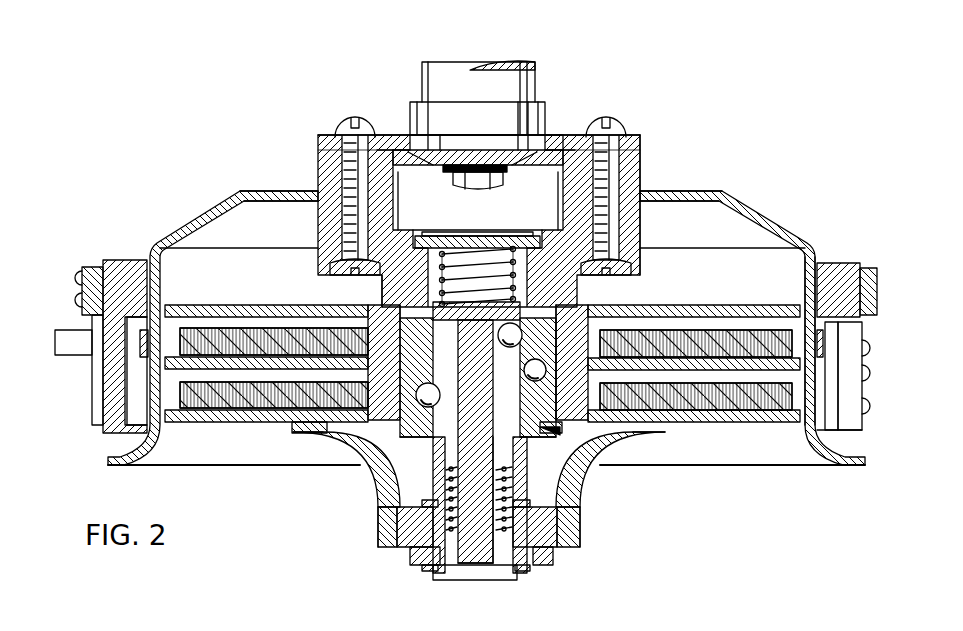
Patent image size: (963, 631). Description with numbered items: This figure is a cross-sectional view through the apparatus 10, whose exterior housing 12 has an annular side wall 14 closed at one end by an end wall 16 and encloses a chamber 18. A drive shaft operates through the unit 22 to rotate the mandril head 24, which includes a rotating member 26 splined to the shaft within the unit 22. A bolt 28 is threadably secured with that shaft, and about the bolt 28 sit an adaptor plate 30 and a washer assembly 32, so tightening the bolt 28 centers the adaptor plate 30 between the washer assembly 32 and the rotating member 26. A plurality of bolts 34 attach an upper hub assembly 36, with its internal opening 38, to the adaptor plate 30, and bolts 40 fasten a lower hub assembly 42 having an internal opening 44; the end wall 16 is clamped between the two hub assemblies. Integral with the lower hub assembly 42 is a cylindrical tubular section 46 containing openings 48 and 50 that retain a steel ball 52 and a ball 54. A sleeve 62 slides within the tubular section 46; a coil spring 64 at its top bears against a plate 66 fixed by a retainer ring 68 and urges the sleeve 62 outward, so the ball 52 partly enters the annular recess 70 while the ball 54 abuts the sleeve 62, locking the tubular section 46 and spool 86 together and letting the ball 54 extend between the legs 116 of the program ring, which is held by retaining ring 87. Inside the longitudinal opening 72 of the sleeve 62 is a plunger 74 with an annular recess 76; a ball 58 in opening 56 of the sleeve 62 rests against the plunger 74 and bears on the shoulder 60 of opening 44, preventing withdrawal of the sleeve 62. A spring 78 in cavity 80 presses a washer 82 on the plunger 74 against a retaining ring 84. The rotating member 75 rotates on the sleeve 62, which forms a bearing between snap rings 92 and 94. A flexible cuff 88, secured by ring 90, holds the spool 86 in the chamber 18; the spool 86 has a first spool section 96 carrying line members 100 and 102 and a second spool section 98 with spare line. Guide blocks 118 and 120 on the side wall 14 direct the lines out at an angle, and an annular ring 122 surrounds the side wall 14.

The apparatus 10 is at (710, 134).
The exterior housing 12 is at (752, 210).
The annular side wall 14 is at (145, 395).
The end wall 16 is at (248, 193).
The chamber 18 is at (218, 215).
The unit 22 is at (505, 62).
The mandril head 24 is at (550, 110).
The rotating member 26 is at (546, 102).
The bolt 28 is at (556, 136).
The adaptor plate 30 is at (395, 137).
The washer assembly 32 is at (440, 152).
The bolts 34 is at (341, 122).
The upper hub assembly 36 is at (637, 187).
The internal opening 38 is at (407, 191).
The bolts 40 is at (641, 166).
The lower hub assembly 42 is at (688, 200).
The internal opening 44 is at (578, 290).
The cylindrical tubular section 46 is at (378, 432).
The opening 48 is at (393, 505).
The opening 50 is at (583, 456).
The steel ball 52 is at (400, 445).
The ball 54 is at (596, 428).
The opening 56 is at (548, 375).
The ball 58 is at (522, 345).
The shoulder 60 is at (372, 308).
The sleeve 62 is at (528, 512).
The coil spring 64 is at (512, 252).
The plate 66 is at (490, 232).
The retainer ring 68 is at (461, 189).
The annular recess 70 is at (516, 497).
The longitudinal opening 72 is at (475, 566).
The plunger 74 is at (505, 566).
The rotating member 75 is at (548, 555).
The annular recess 76 is at (399, 306).
The spring 78 is at (562, 528).
The cavity 80 is at (455, 566).
The washer 82 is at (534, 567).
The retaining ring 84 is at (426, 568).
The spool 86 is at (758, 298).
The retaining ring 87 is at (566, 477).
The cuff 88 is at (318, 435).
The ring 90 is at (386, 526).
The snap ring 92 is at (528, 507).
The snap ring 94 is at (411, 546).
The first spool section 96 is at (806, 280).
The second spool section 98 is at (800, 367).
The line member 100 is at (826, 348).
The line member 102 is at (84, 354).
The legs 116 is at (278, 305).
The guide block 118 is at (124, 265).
The guide block 120 is at (858, 270).
The annular ring 122 is at (84, 275).